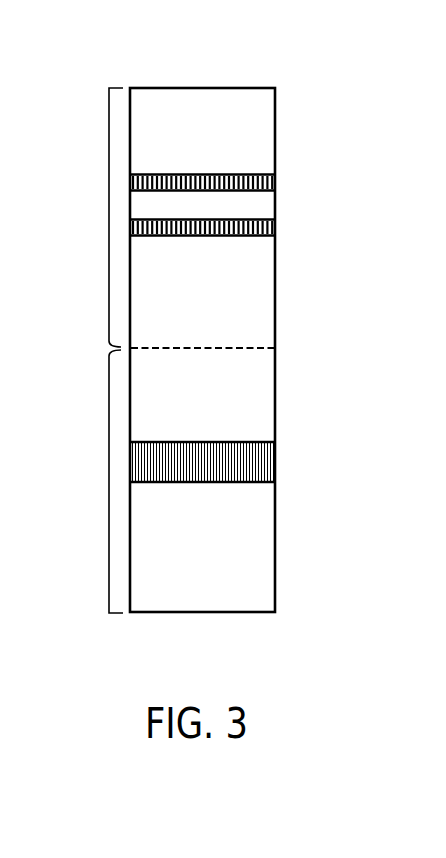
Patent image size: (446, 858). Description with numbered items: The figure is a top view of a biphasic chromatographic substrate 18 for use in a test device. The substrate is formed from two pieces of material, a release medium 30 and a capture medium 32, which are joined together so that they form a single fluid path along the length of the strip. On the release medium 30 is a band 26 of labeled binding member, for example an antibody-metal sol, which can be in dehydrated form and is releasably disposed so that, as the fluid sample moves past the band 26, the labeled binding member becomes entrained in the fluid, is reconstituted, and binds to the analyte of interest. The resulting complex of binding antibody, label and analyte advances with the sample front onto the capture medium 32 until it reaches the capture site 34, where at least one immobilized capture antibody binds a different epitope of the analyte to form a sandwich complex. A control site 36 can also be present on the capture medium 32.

The biphasic chromatographic substrate 18 is at (249, 60).
The capture medium 32 is at (109, 217).
The release medium 30 is at (109, 481).
The control site 36 is at (276, 181).
The capture site 34 is at (276, 228).
The band of labeled binding member 26 is at (276, 462).